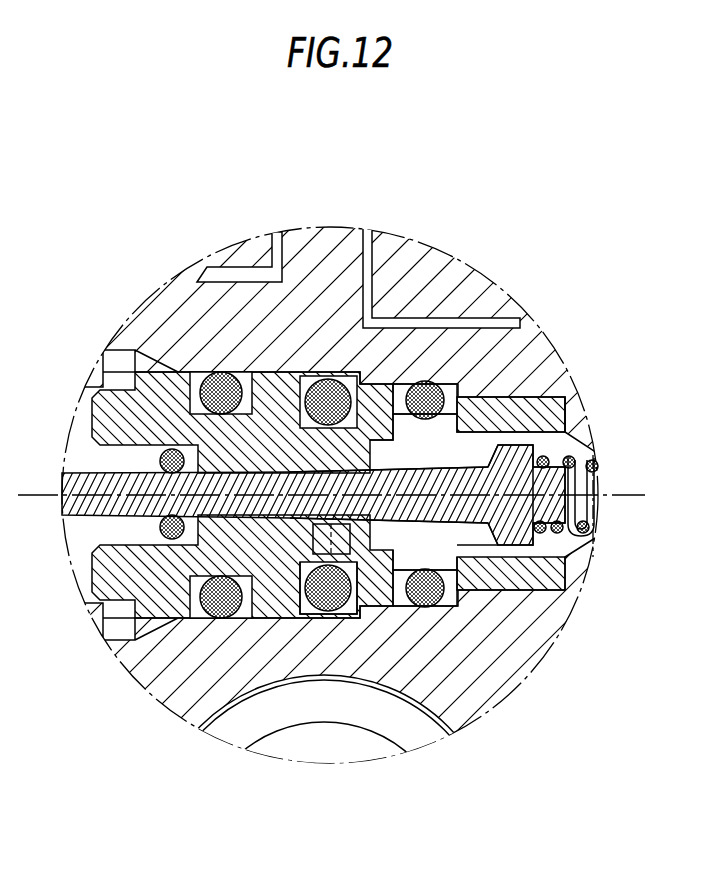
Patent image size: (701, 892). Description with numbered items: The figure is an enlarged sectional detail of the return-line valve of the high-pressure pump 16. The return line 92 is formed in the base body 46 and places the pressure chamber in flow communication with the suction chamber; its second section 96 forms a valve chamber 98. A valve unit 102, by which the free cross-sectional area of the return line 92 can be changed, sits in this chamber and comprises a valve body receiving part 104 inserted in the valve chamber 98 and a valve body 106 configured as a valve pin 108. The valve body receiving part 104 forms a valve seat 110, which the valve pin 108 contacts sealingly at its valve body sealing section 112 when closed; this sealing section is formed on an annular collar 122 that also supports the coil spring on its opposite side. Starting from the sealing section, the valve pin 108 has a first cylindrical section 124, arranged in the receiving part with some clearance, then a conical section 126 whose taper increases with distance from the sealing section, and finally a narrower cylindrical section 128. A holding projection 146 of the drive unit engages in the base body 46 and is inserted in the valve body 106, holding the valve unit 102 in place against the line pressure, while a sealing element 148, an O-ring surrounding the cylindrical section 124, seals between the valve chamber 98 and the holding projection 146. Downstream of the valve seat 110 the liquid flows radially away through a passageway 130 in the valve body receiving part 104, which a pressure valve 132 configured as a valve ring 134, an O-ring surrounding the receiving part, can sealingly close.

The high-pressure pump 16 is at (333, 193).
The base body 46 is at (467, 693).
The return line 92 is at (473, 442).
The second section 96 is at (518, 538).
The valve chamber 98 is at (428, 560).
The valve unit 102 is at (449, 435).
The valve body receiving part 104 is at (291, 440).
The valve body 106 is at (465, 485).
The valve pin 108 is at (460, 507).
The valve seat 110 is at (394, 428).
The valve body sealing section 112 is at (505, 450).
The annular collar 122 is at (560, 598).
The cylindrical section 124 is at (485, 543).
The conical section 126 is at (385, 512).
The cylindrical section 128 is at (270, 470).
The passageway 130 is at (222, 605).
The pressure valve 132 is at (318, 598).
The valve ring 134 is at (340, 590).
The holding projection 146 is at (120, 365).
The sealing element 148 is at (172, 450).